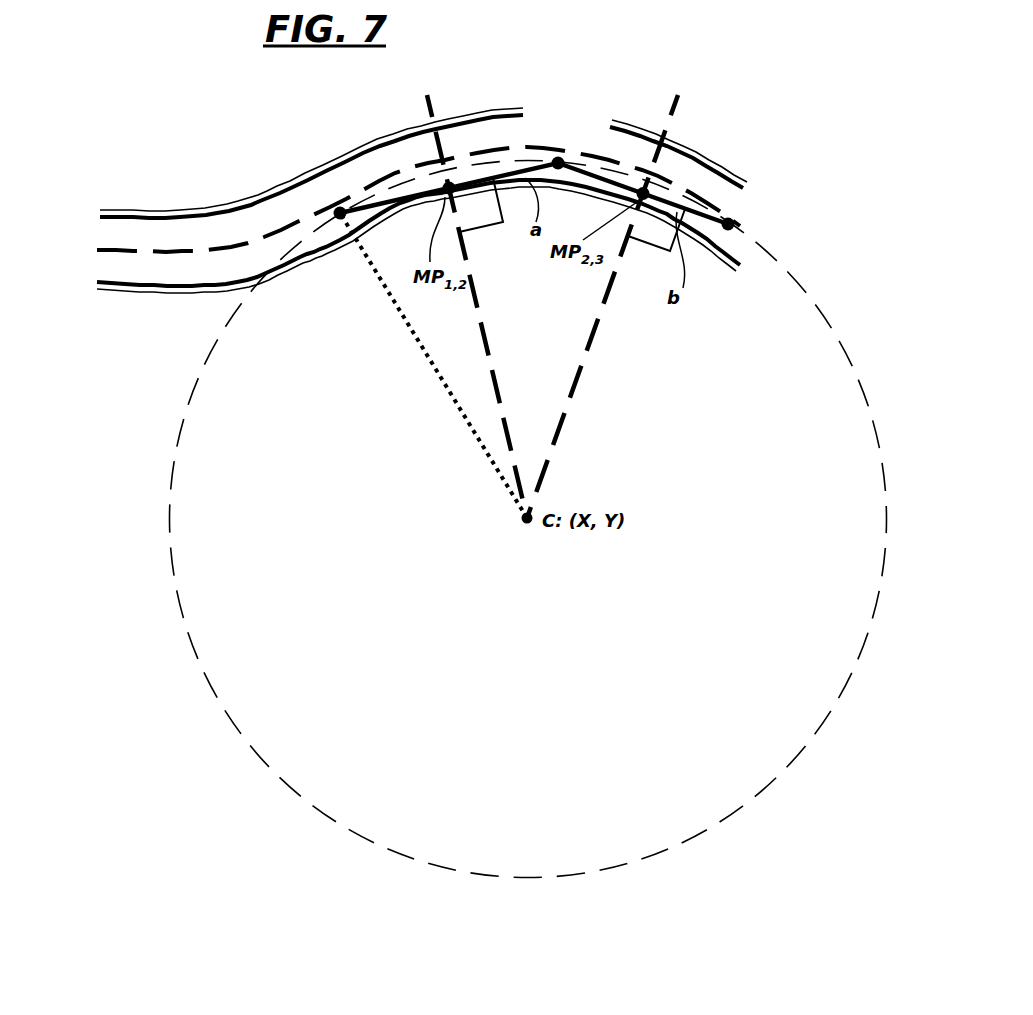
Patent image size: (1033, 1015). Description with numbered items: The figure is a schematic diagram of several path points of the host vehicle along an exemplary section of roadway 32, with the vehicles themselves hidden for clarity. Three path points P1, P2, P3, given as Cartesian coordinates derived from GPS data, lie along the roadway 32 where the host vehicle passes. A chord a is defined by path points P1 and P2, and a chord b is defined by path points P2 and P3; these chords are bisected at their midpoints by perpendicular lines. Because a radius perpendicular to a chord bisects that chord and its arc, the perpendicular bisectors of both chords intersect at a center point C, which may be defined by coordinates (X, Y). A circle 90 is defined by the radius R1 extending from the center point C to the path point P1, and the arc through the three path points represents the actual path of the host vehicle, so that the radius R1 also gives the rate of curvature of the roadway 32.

The roadway 32 is at (129, 196).
The circle 90 is at (166, 423).
The radius R1 is at (443, 383).
The path point P1 is at (298, 195).
The path point P2 is at (569, 139).
The path point P3 is at (784, 216).